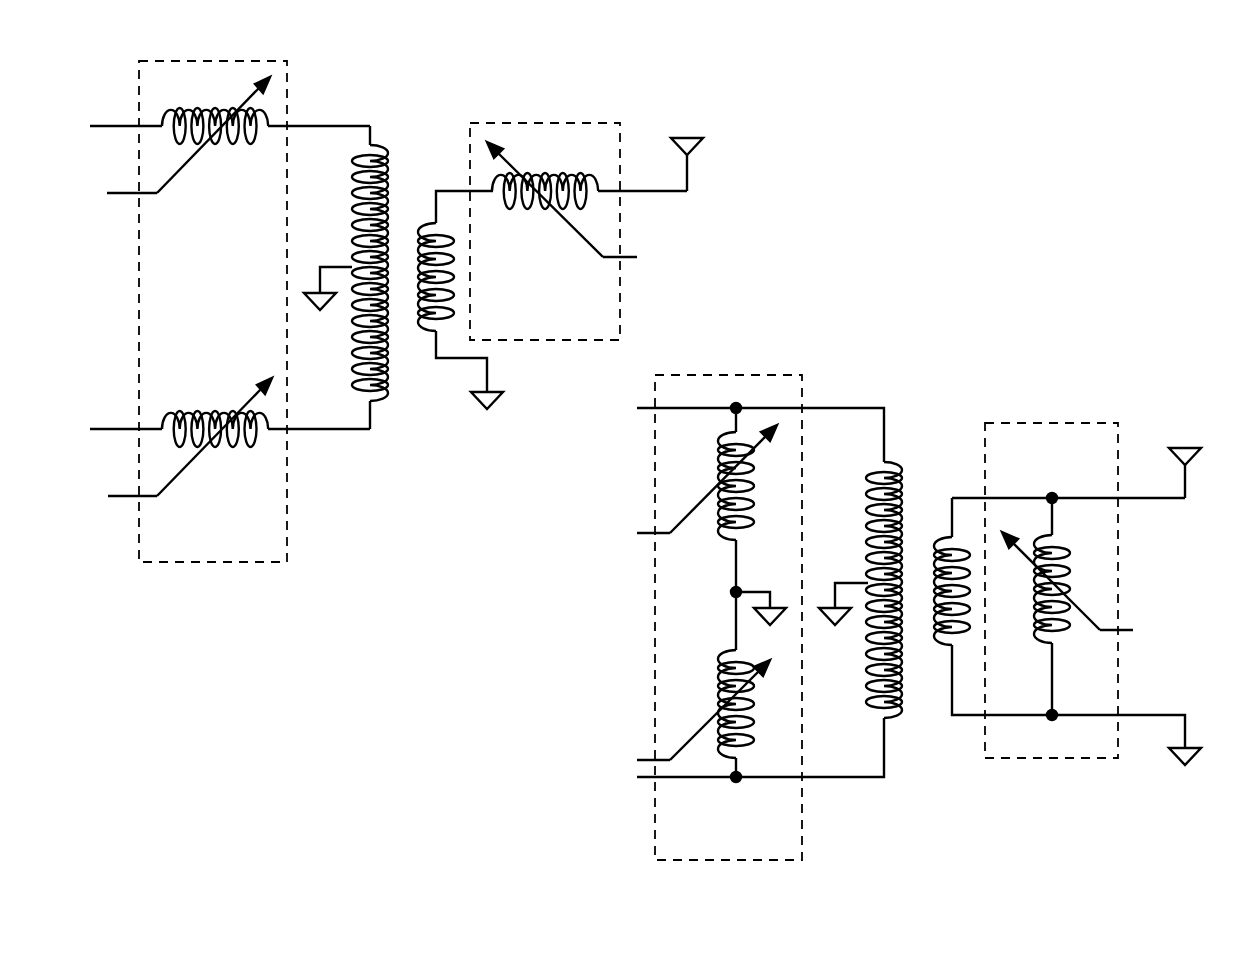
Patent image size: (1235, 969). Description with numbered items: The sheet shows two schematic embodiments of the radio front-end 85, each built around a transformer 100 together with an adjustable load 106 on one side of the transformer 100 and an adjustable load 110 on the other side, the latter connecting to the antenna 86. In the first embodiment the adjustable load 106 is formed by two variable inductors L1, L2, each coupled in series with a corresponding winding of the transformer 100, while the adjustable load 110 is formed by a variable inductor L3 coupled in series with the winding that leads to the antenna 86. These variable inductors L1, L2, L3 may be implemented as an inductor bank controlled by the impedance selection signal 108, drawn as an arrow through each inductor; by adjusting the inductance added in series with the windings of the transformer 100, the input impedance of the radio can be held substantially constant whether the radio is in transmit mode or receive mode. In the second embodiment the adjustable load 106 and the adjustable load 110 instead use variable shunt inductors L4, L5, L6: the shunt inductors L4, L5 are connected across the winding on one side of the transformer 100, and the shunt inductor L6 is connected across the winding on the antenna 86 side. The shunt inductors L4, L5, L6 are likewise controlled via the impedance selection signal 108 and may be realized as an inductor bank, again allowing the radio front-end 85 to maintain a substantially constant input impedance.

In FIG. 7, the radio front-end 85 is at (371, 375).
In FIG. 8, the radio front-end 85 is at (885, 647).
In FIG. 7, the antenna 86 is at (687, 151).
In FIG. 8, the antenna 86 is at (1185, 459).
In FIG. 7, the transformer 100 is at (403, 298).
In FIG. 8, the transformer 100 is at (919, 610).
In FIG. 7, the adjustable load 106 is at (230, 311).
In FIG. 8, the adjustable load 106 is at (728, 617).
In FIG. 7, the impedance selection signal 108 is at (371, 314).
In FIG. 8, the impedance selection signal 108 is at (885, 622).
In FIG. 7, the adjustable load 110 is at (578, 231).
In FIG. 8, the adjustable load 110 is at (1068, 590).
In FIG. 7, the variable inductor L1 is at (230, 142).
In FIG. 7, the variable inductor L2 is at (230, 446).
In FIG. 7, the variable inductor L3 is at (589, 208).
In FIG. 8, the variable shunt inductor L4 is at (755, 500).
In FIG. 8, the variable shunt inductor L5 is at (755, 684).
In FIG. 8, the variable shunt inductor L6 is at (1071, 606).